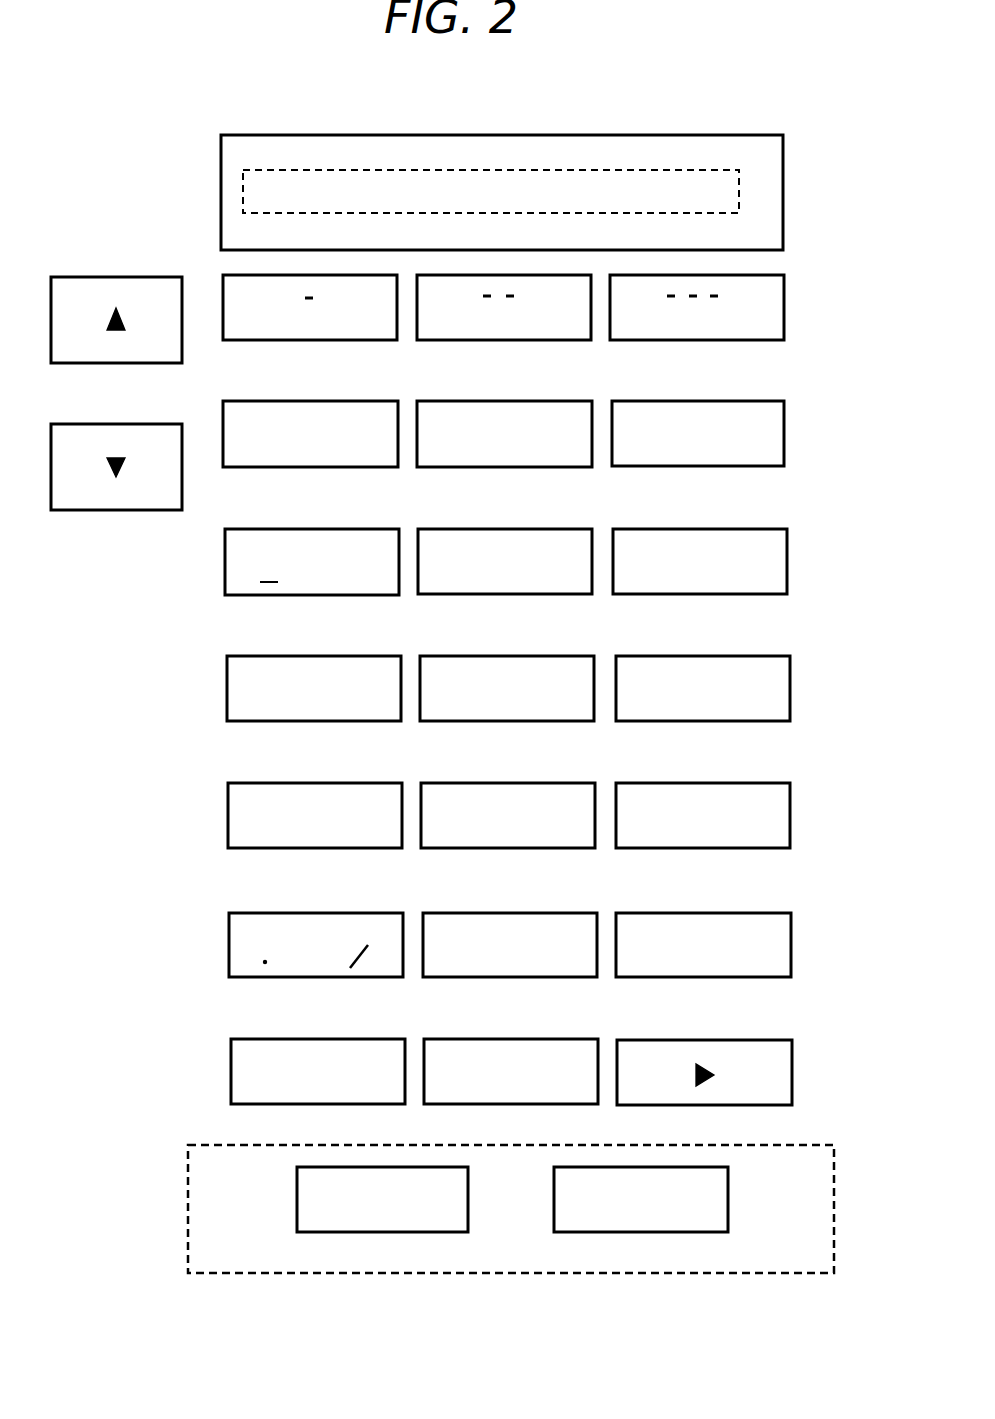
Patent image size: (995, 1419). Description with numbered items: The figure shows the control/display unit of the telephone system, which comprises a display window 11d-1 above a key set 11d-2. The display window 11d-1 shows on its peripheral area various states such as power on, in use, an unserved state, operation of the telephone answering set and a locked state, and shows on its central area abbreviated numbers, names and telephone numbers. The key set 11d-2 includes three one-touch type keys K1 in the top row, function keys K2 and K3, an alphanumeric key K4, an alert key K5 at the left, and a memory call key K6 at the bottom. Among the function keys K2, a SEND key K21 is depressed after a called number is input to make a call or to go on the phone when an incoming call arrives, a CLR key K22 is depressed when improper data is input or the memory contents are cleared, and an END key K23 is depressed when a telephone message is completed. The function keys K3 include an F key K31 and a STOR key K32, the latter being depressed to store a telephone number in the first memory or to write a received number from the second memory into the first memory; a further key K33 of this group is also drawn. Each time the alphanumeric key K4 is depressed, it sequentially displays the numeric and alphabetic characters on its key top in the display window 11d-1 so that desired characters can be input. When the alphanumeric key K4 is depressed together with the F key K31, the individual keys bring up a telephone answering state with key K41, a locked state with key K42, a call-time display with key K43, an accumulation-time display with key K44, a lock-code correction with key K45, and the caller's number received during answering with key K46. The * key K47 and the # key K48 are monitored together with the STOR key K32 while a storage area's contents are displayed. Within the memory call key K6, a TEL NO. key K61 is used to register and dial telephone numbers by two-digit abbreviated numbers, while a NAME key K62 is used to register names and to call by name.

The display window 11d-1 is at (655, 134).
The key set 11d-2 is at (151, 980).
The one-touch type keys K1 is at (798, 267).
The function keys K2 is at (528, 419).
The SEND key K21 is at (358, 401).
The CLR key K22 is at (551, 401).
The END key K23 is at (746, 401).
The function keys K3 is at (536, 1046).
The F key K31 is at (384, 1038).
The STOR key K32 is at (577, 1038).
The function key K33 is at (769, 1038).
The alphanumeric key K4 is at (533, 727).
The telephone answering state key K41 is at (570, 528).
The locked state key K42 is at (764, 528).
The call-time display key K43 is at (574, 655).
The accumulation-time display key K44 is at (767, 655).
The lock-code correction key K45 is at (574, 782).
The caller number recall key K46 is at (577, 912).
The * key K47 is at (382, 912).
The # key K48 is at (703, 917).
The alert key K5 is at (183, 256).
The memory call key K6 is at (537, 1208).
The TEL NO. key K61 is at (468, 1184).
The NAME key K62 is at (728, 1184).